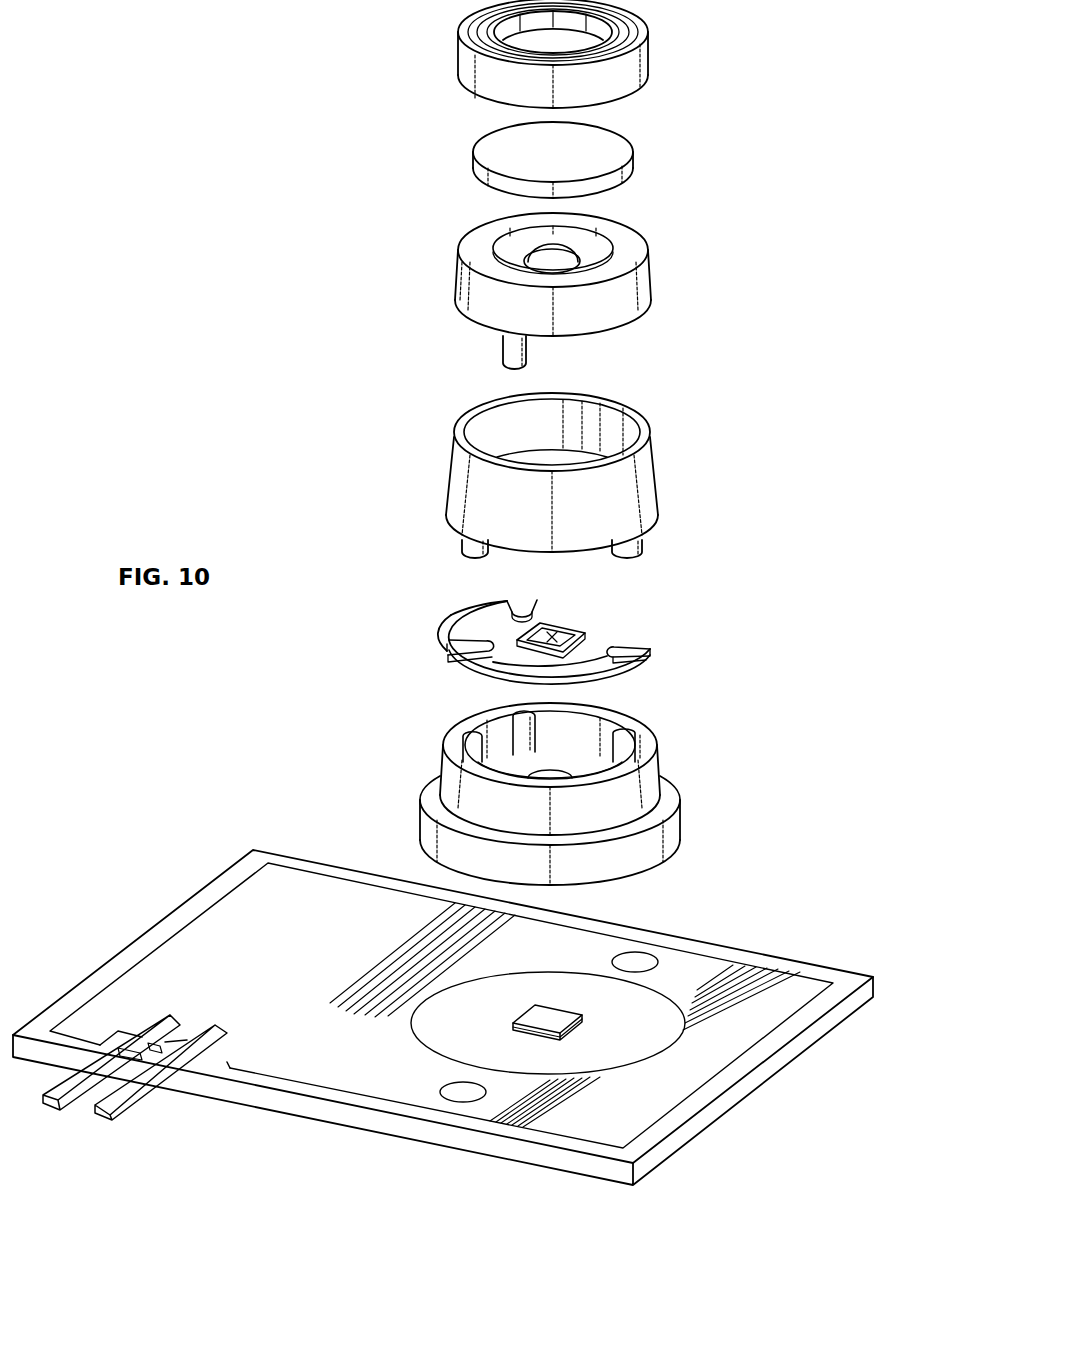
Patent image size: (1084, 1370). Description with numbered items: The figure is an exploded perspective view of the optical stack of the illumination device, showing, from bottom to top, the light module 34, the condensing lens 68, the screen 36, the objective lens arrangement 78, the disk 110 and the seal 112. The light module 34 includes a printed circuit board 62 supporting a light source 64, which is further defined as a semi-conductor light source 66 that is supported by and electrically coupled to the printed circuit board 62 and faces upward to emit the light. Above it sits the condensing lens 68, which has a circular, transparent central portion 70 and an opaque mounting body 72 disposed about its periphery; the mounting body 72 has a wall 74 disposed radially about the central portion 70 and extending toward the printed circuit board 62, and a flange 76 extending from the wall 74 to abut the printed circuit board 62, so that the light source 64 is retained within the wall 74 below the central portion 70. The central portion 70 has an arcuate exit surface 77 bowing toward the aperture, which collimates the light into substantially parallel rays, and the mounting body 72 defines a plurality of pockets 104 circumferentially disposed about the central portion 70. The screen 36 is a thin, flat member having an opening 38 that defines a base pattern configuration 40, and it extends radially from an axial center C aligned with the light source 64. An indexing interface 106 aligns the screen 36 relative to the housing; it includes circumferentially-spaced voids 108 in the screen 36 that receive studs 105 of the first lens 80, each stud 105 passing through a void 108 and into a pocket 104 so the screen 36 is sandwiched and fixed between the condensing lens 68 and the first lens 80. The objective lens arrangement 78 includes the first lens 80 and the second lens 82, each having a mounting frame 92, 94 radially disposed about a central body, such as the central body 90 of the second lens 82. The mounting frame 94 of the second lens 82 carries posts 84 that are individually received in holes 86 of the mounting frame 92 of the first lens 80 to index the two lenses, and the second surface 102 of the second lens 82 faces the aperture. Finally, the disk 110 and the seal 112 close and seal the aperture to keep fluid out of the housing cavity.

The light module 34 is at (443, 1017).
The screen 36 is at (558, 621).
The opening 38 is at (570, 632).
The base pattern configuration 40 is at (470, 623).
The printed circuit board 62 is at (170, 913).
The light source 64 is at (518, 1018).
The semi-conductor light source 66 is at (546, 1012).
The condensing lens 68 is at (548, 781).
The central portion 70 is at (572, 772).
The mounting body 72 is at (652, 791).
The wall 74 is at (652, 768).
The flange 76 is at (668, 826).
The exit surface 77 is at (540, 772).
The objective lens arrangement 78 is at (563, 290).
The first lens 80 is at (596, 472).
The second lens 82 is at (650, 289).
The posts 84 is at (510, 357).
The holes 86 is at (590, 412).
The central body 90 is at (576, 262).
The mounting frame 92 is at (456, 488).
The mounting frame 94 is at (463, 288).
The second surface 102 is at (536, 262).
The pockets 104 is at (528, 742).
The studs 105 is at (466, 548).
The indexing interface 106 is at (540, 634).
The voids 108 is at (514, 602).
The disk 110 is at (618, 146).
The seal 112 is at (636, 62).
The axial center C is at (553, 634).